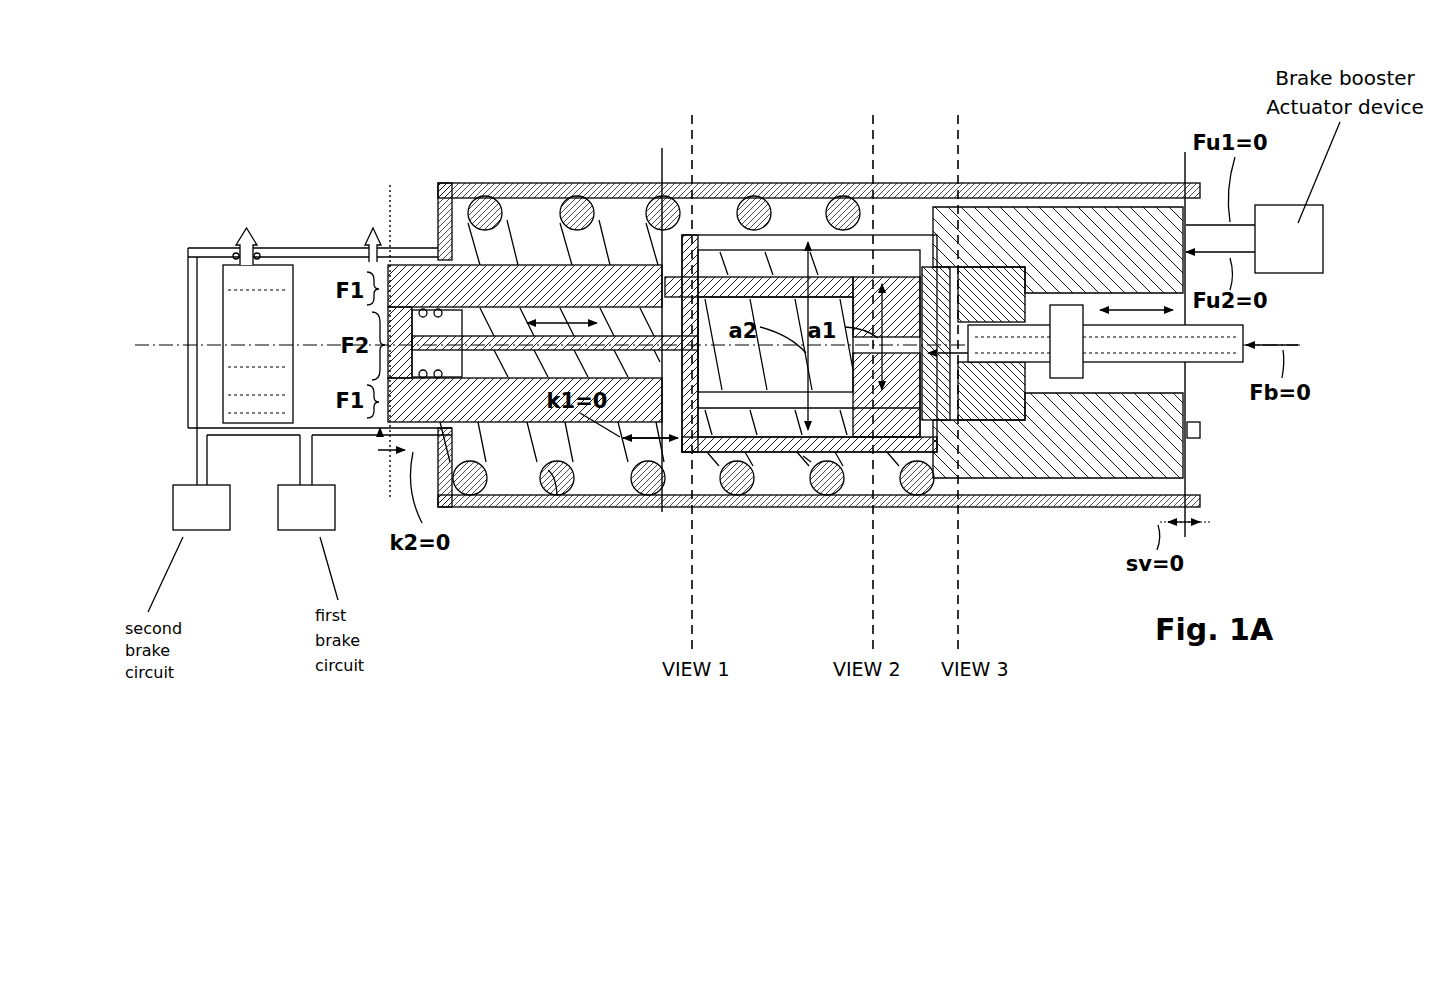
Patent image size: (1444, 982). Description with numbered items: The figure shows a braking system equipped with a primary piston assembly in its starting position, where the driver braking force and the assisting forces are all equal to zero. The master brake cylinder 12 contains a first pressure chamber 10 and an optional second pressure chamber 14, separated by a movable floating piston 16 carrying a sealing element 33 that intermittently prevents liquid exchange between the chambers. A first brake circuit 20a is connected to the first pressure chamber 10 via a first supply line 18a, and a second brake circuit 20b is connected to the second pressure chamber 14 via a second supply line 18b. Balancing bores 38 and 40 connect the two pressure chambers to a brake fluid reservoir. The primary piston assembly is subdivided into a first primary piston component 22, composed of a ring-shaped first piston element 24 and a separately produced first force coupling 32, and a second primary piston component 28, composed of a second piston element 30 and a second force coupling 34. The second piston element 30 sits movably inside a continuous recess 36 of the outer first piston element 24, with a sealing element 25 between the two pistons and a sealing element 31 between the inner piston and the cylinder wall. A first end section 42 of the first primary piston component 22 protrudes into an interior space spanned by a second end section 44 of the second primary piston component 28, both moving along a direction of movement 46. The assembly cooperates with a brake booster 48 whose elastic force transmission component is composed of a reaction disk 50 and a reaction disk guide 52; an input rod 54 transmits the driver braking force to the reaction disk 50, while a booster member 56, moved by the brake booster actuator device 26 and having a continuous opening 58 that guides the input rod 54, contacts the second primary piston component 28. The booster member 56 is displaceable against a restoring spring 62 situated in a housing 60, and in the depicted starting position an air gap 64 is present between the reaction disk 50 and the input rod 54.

The first pressure chamber 10 is at (330, 277).
The master brake cylinder 12 is at (305, 250).
The second pressure chamber 14 is at (210, 292).
The floating piston 16 is at (238, 322).
The first supply line 18a is at (300, 462).
The second supply line 18b is at (198, 462).
The first brake circuit 20a is at (306, 531).
The second brake circuit 20b is at (202, 531).
The first primary piston component 22 is at (828, 286).
The first piston element 24 is at (613, 290).
The sealing element 25 is at (438, 310).
The brake booster actuator device 26 is at (1288, 204).
The second primary piston component 28 is at (460, 390).
The second piston element 30 is at (400, 315).
The sealing element 31 is at (383, 435).
The first force coupling 32 is at (865, 305).
The sealing element 33 is at (259, 253).
The second force coupling 34 is at (775, 465).
The continuous recess 36 is at (562, 321).
The balancing bore 38 is at (373, 236).
The balancing bore 40 is at (247, 230).
The first end section 42 is at (905, 266).
The second end section 44 is at (928, 226).
The direction of movement 46 is at (143, 350).
The brake booster 48 is at (1046, 196).
The reaction disk 50 is at (935, 425).
The reaction disk guide 52 is at (983, 287).
The input rod 54 is at (1215, 356).
The booster member 56 is at (1045, 462).
The continuous opening 58 is at (1137, 305).
The housing 60 is at (808, 462).
The restoring spring 62 is at (562, 496).
The air gap 64 is at (962, 422).